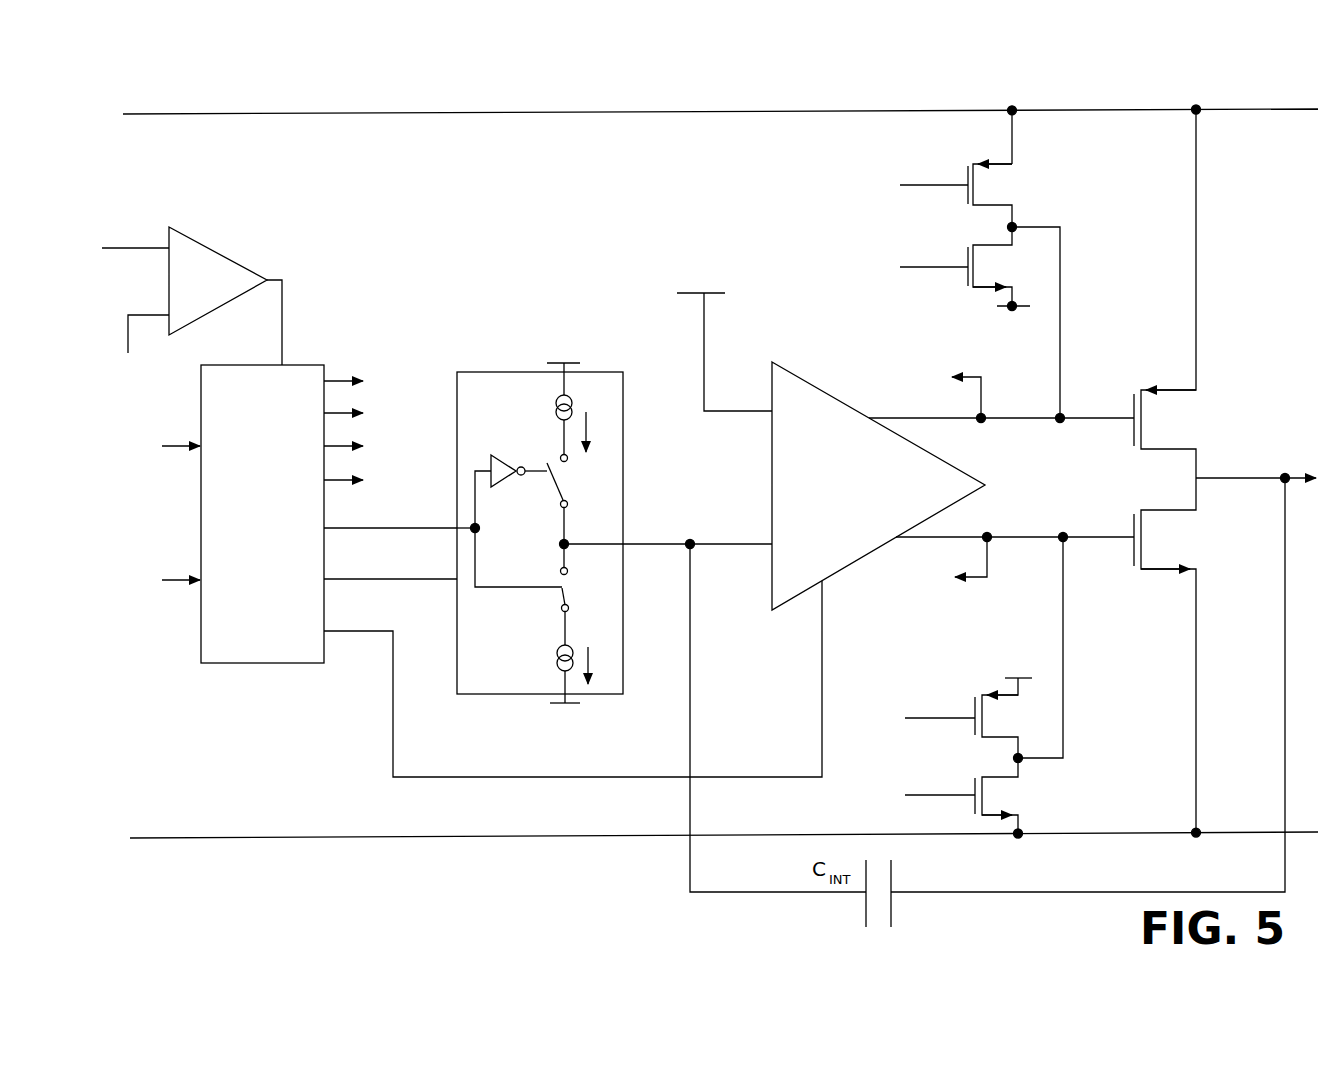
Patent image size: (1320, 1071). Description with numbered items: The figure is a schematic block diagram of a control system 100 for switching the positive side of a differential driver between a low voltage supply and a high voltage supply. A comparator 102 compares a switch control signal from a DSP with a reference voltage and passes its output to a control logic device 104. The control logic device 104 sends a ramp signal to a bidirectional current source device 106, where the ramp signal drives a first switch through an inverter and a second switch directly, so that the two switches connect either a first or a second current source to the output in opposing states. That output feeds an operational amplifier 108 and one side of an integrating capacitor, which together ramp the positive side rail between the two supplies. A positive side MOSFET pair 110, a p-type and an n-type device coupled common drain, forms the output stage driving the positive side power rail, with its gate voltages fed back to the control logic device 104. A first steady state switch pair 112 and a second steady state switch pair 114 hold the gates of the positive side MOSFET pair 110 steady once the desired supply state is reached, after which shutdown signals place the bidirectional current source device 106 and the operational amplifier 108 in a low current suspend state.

The control system 100 is at (1212, 86).
The comparator 102 is at (217, 252).
The control logic device 104 is at (302, 365).
The bidirectional current source device 106 is at (623, 460).
The operational amplifier 108 is at (802, 377).
The positive side MOSFET pair 110 is at (1232, 372).
The first steady state switch pair 112 is at (1052, 174).
The second steady state switch pair 114 is at (1092, 705).